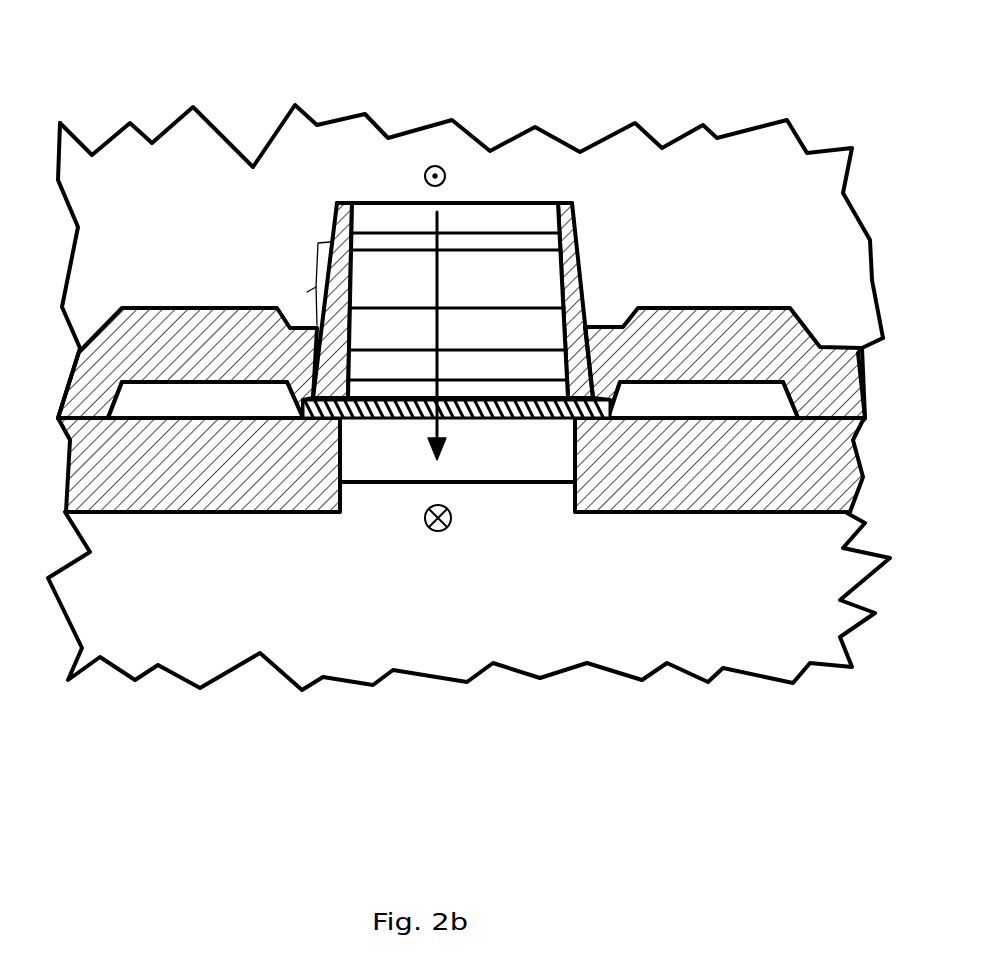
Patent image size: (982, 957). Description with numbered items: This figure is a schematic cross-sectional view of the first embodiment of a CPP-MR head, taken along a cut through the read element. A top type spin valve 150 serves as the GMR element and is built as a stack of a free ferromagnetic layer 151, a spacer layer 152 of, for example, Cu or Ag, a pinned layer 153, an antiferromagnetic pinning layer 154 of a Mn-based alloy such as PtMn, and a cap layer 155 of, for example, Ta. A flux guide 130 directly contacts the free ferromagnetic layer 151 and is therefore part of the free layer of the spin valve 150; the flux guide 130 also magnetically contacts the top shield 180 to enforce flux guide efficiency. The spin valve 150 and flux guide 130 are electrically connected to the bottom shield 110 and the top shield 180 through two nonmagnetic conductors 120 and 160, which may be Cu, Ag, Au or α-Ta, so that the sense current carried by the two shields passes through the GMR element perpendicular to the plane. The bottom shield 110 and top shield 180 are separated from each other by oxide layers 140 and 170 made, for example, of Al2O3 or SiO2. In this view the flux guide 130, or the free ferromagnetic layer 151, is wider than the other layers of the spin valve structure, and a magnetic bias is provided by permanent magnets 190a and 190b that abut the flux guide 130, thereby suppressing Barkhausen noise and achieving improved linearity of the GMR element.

The bottom shield 110 is at (223, 635).
The nonmagnetic conductor 120 is at (403, 452).
The flux guide 130 is at (480, 420).
The oxide layer 140 is at (155, 485).
The top type spin valve 150 is at (461, 239).
The free ferromagnetic layer 151 is at (545, 390).
The spacer layer 152 is at (515, 367).
The pinned layer 153 is at (487, 333).
The antiferromagnetic pinning layer 154 is at (458, 293).
The cap layer 155 is at (405, 242).
The nonmagnetic conductor 160 is at (365, 217).
The oxide layer 170 is at (842, 75).
The top shield 180 is at (255, 185).
The permanent magnet 190a is at (213, 407).
The permanent magnet 190b is at (700, 407).